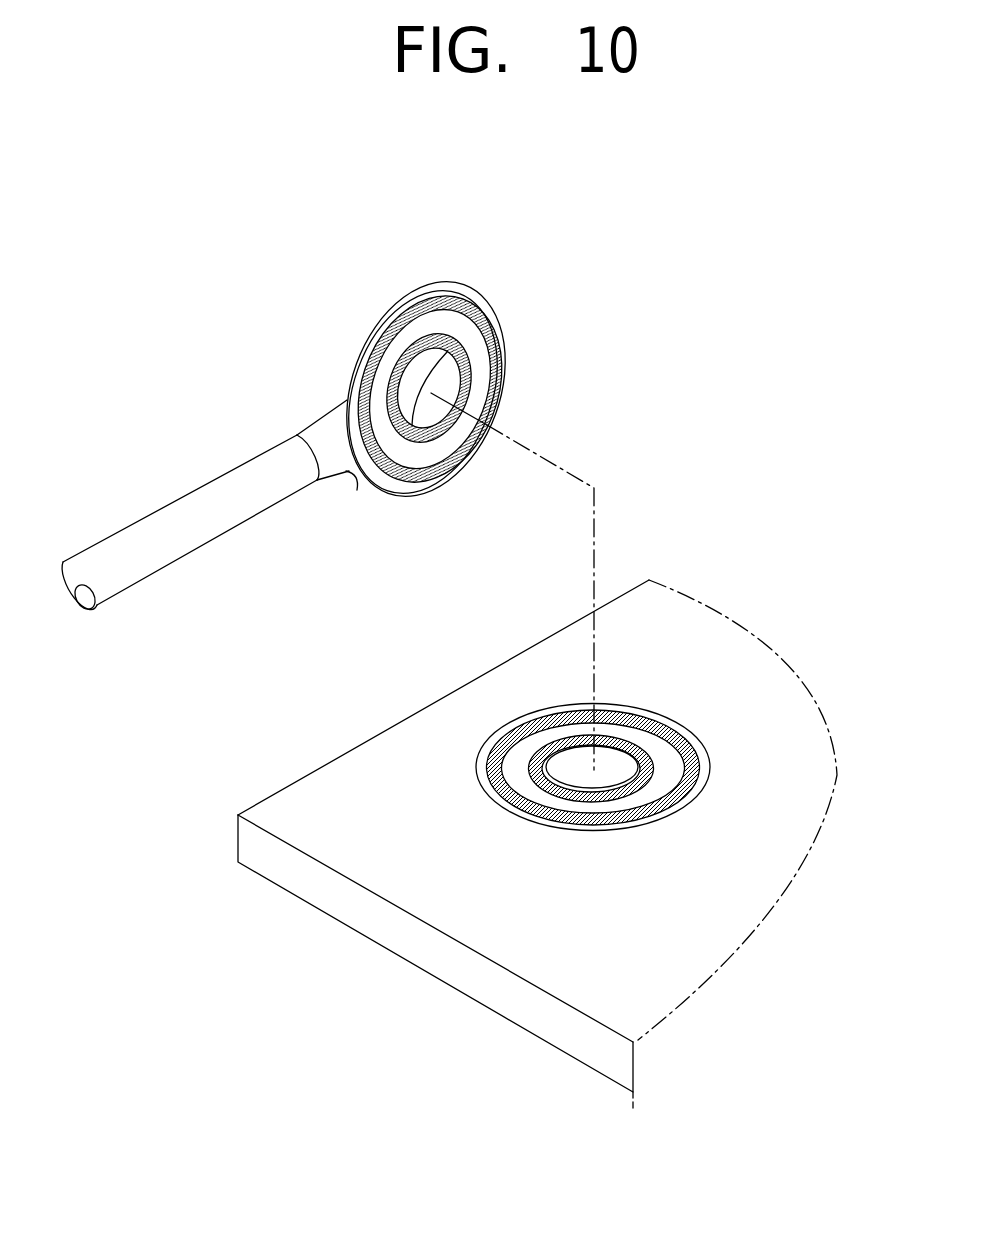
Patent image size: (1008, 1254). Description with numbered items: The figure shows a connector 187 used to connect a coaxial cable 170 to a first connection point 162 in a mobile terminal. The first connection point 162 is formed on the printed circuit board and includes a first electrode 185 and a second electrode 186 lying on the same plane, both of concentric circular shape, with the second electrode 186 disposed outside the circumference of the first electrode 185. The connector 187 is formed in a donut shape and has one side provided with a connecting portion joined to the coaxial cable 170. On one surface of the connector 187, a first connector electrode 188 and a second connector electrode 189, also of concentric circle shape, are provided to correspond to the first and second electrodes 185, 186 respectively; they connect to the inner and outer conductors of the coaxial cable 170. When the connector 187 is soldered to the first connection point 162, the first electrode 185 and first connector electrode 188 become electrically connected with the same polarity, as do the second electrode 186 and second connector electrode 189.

The first connection point 162 is at (672, 687).
The coaxial cable 170 is at (173, 517).
The first electrode 185 is at (652, 765).
The second electrode 186 is at (631, 702).
The connector 187 is at (443, 373).
The first connector electrode 188 is at (476, 370).
The second connector electrode 189 is at (495, 318).